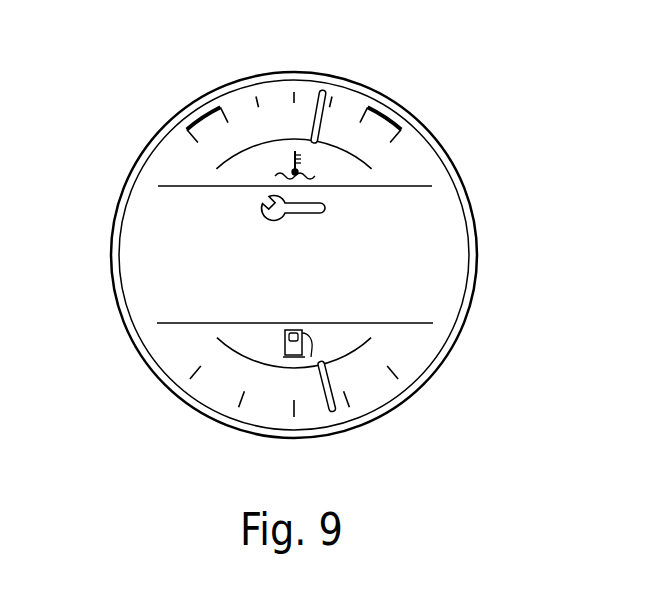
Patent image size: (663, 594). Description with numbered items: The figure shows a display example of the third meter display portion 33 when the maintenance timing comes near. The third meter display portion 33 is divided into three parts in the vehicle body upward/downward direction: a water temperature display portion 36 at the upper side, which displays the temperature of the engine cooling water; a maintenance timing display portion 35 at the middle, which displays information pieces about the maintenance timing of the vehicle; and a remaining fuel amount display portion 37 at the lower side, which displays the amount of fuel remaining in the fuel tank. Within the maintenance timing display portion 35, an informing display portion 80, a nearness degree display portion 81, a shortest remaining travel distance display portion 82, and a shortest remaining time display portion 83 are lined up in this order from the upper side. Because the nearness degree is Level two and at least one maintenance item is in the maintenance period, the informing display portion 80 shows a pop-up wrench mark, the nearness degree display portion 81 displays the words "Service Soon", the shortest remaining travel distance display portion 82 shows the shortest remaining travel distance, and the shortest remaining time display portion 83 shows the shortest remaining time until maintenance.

The third meter display portion 33 is at (467, 122).
The maintenance timing display portion 35 is at (158, 256).
The water temperature display portion 36 is at (196, 160).
The remaining fuel amount display portion 37 is at (207, 390).
The informing display portion 80 is at (327, 207).
The nearness degree display portion 81 is at (378, 242).
The shortest remaining travel distance display portion 82 is at (352, 270).
The shortest remaining time display portion 83 is at (348, 295).